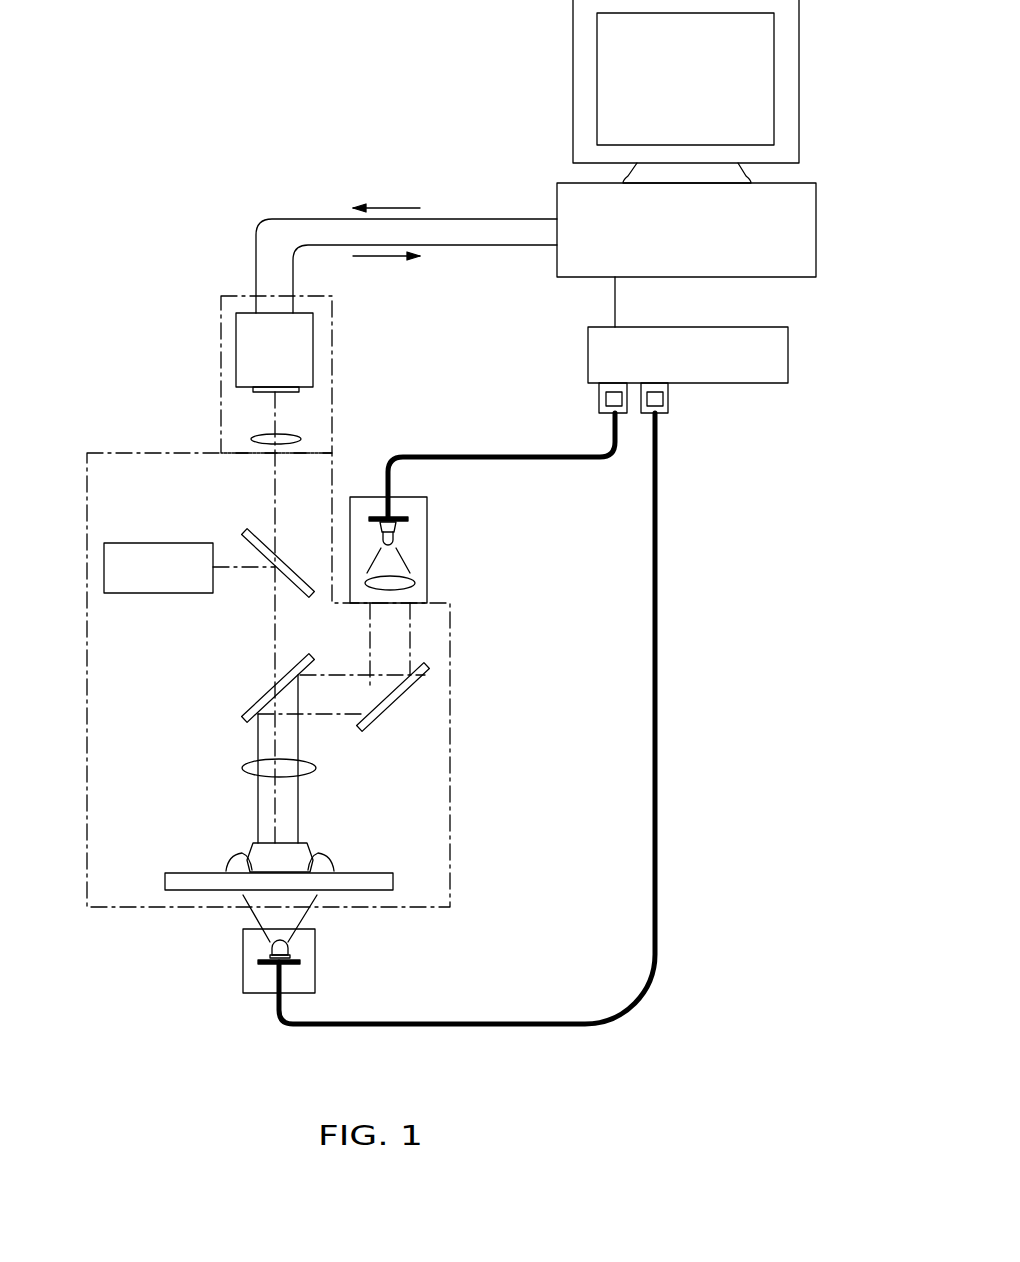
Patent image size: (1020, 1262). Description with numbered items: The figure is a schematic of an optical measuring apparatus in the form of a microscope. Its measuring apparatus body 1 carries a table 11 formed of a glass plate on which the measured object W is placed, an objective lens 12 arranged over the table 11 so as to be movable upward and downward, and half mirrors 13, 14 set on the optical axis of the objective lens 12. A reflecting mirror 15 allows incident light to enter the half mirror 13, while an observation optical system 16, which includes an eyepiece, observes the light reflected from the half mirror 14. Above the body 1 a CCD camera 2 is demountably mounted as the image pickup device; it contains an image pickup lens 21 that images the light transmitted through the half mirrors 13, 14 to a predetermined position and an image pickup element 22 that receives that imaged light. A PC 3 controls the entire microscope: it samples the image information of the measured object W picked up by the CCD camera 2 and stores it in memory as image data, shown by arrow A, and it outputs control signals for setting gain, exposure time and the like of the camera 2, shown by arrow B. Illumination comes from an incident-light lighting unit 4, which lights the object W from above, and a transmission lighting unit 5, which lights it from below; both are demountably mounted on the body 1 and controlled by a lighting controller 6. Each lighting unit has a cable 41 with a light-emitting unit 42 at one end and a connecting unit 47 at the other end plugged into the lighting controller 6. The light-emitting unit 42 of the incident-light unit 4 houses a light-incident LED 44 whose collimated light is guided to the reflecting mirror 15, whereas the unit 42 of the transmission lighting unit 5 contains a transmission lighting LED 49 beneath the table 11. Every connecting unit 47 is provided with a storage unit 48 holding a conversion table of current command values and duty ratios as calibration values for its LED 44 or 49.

The measuring apparatus body 1 is at (86, 684).
The CCD camera 2 is at (319, 374).
The PC 3 is at (816, 200).
The incident-light lighting unit 4 is at (460, 575).
The transmission lighting unit 5 is at (349, 995).
The lighting controller 6 is at (788, 355).
The table 11 is at (165, 875).
The objective lens 12 is at (242, 768).
The half mirror 13 is at (250, 712).
The half mirror 14 is at (245, 530).
The reflecting mirror 15 is at (400, 703).
The observation optical system 16 is at (155, 593).
The image pickup lens 21 is at (318, 422).
The image pickup element 22 is at (313, 348).
The cable 41 is at (473, 455).
The light-emitting unit 42 is at (427, 505).
The light-incident LED 44 is at (396, 535).
The connecting unit 47 is at (599, 408).
The storage unit 48 is at (606, 398).
The transmission lighting LED 49 is at (270, 947).
The measured object W is at (253, 846).
The arrow A is at (385, 262).
The arrow B is at (396, 205).